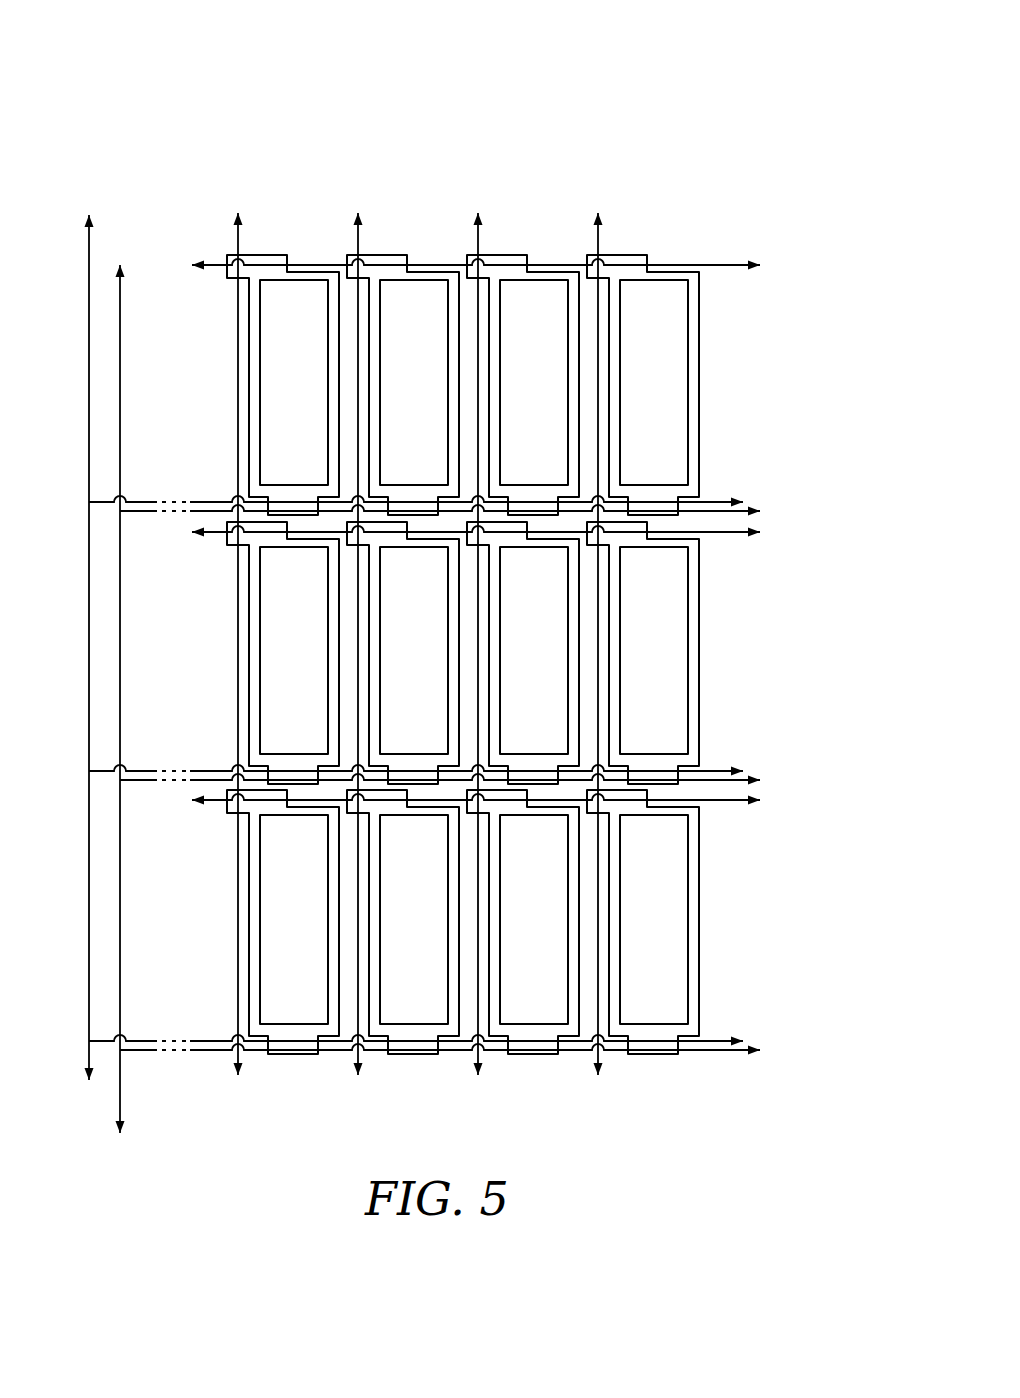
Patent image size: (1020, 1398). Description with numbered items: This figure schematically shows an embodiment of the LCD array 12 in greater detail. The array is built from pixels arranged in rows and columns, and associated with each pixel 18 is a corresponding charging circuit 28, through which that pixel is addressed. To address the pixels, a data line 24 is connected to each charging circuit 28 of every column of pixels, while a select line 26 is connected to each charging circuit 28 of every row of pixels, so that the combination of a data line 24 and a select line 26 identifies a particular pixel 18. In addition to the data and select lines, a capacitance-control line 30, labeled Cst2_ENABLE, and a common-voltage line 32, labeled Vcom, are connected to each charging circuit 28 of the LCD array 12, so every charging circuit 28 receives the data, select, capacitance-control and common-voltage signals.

The LCD array 12 is at (430, 548).
The pixel 18 is at (303, 661).
The data line 24 is at (687, 199).
The select line 26 is at (797, 882).
The charging circuit 28 is at (250, 653).
The capacitance-control line 30 is at (121, 908).
The common-voltage line 32 is at (89, 338).